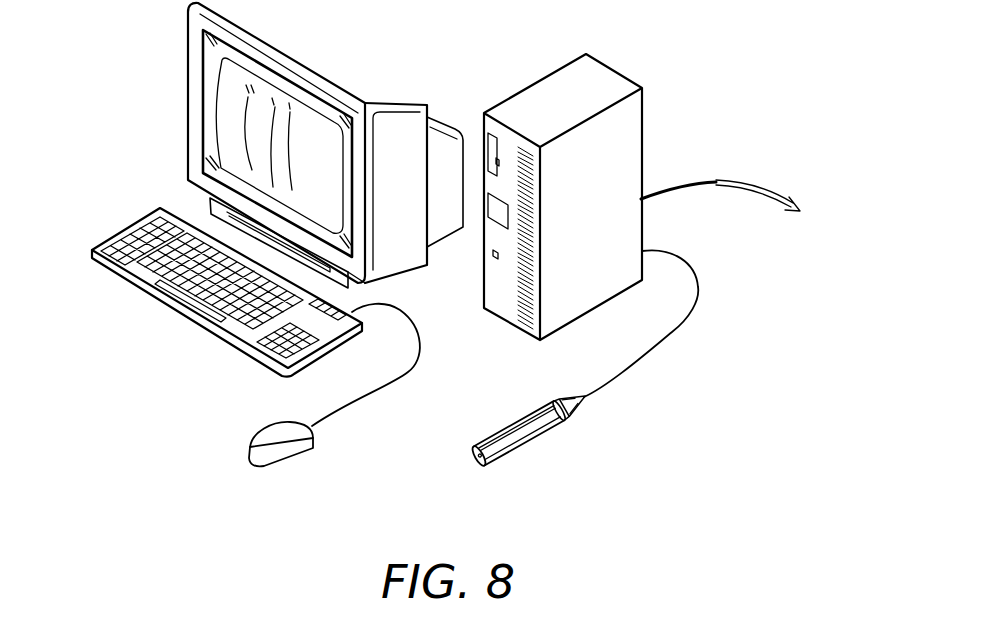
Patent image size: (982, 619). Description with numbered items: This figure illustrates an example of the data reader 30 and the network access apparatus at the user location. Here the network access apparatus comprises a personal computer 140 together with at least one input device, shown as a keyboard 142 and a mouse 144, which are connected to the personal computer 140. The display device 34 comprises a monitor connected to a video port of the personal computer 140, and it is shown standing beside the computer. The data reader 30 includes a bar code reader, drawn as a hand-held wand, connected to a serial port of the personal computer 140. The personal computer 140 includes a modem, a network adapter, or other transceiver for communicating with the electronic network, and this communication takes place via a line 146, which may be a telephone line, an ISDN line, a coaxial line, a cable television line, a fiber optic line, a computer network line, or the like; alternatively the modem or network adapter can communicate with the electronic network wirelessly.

The display device 34 is at (193, 57).
The personal computer 140 is at (555, 87).
The keyboard 142 is at (98, 265).
The mouse 144 is at (248, 441).
The line 146 is at (717, 181).
The data reader 30 is at (533, 440).